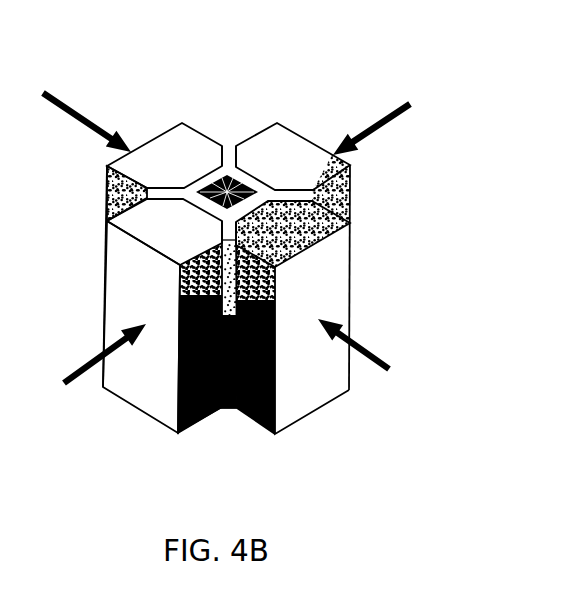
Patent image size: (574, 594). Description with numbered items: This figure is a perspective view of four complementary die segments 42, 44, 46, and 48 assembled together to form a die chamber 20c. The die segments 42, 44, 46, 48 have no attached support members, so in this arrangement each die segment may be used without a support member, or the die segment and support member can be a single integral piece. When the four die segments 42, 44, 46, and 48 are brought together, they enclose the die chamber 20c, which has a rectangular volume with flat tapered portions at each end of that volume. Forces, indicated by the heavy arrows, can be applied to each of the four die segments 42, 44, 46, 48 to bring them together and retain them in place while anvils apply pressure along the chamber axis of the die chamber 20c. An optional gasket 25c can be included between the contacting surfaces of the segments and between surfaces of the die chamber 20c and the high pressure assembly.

The die segment 42 is at (164, 172).
The die segment 44 is at (293, 256).
The die segment 46 is at (293, 317).
The die segment 48 is at (162, 299).
The die chamber 20c is at (235, 194).
The gasket 25c is at (230, 152).